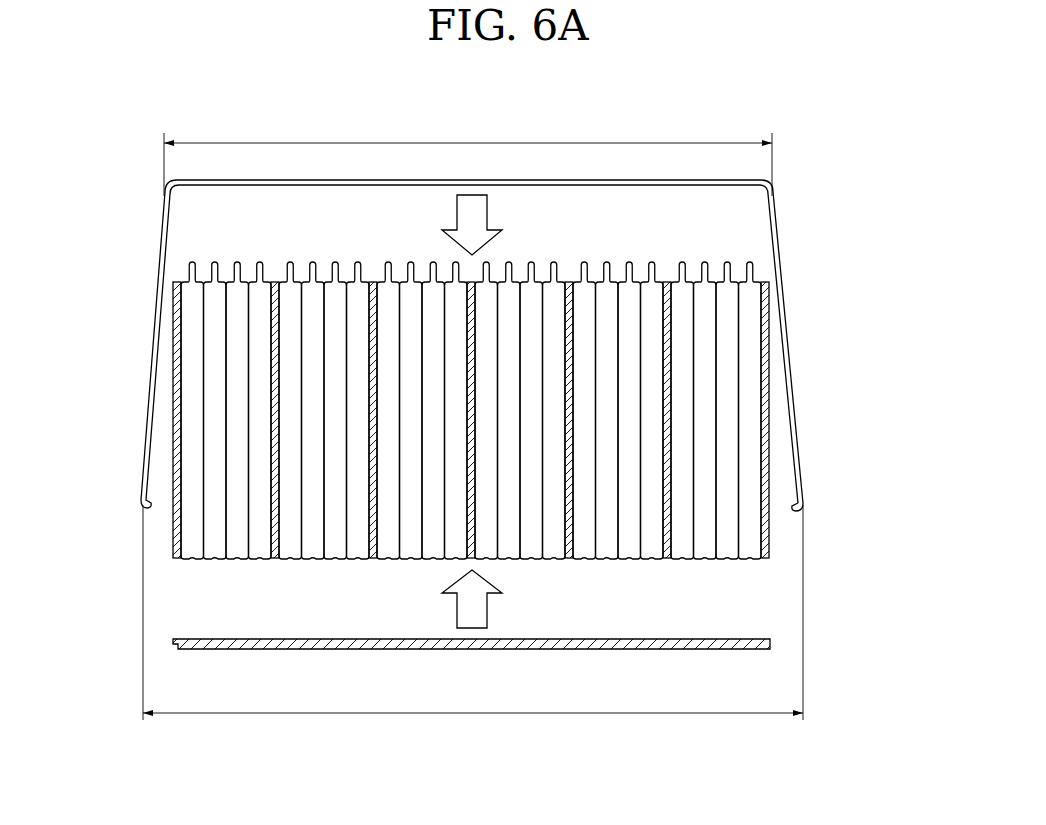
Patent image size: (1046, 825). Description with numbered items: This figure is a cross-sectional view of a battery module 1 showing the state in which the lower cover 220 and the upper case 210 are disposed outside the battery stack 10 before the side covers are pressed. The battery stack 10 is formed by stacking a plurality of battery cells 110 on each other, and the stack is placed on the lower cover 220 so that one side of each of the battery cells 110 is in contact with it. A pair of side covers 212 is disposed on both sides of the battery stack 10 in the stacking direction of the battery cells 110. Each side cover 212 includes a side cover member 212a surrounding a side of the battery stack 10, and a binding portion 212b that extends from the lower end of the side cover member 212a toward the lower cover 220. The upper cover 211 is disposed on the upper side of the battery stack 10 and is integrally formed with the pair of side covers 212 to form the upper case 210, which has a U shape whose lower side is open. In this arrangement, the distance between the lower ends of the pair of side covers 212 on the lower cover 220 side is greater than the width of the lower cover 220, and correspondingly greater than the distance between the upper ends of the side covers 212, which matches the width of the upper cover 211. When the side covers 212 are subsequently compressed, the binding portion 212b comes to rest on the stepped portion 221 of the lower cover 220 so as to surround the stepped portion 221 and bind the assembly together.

The battery module 1 is at (60, 117).
The battery stack 10 is at (766, 566).
The battery cell 110 is at (752, 342).
The upper case 210 is at (790, 242).
The upper cover 211 is at (742, 178).
The side cover 212 is at (897, 407).
The side cover member 212a is at (795, 413).
The binding portion 212b is at (796, 512).
The lower cover 220 is at (560, 656).
The stepped portion 221 is at (770, 644).